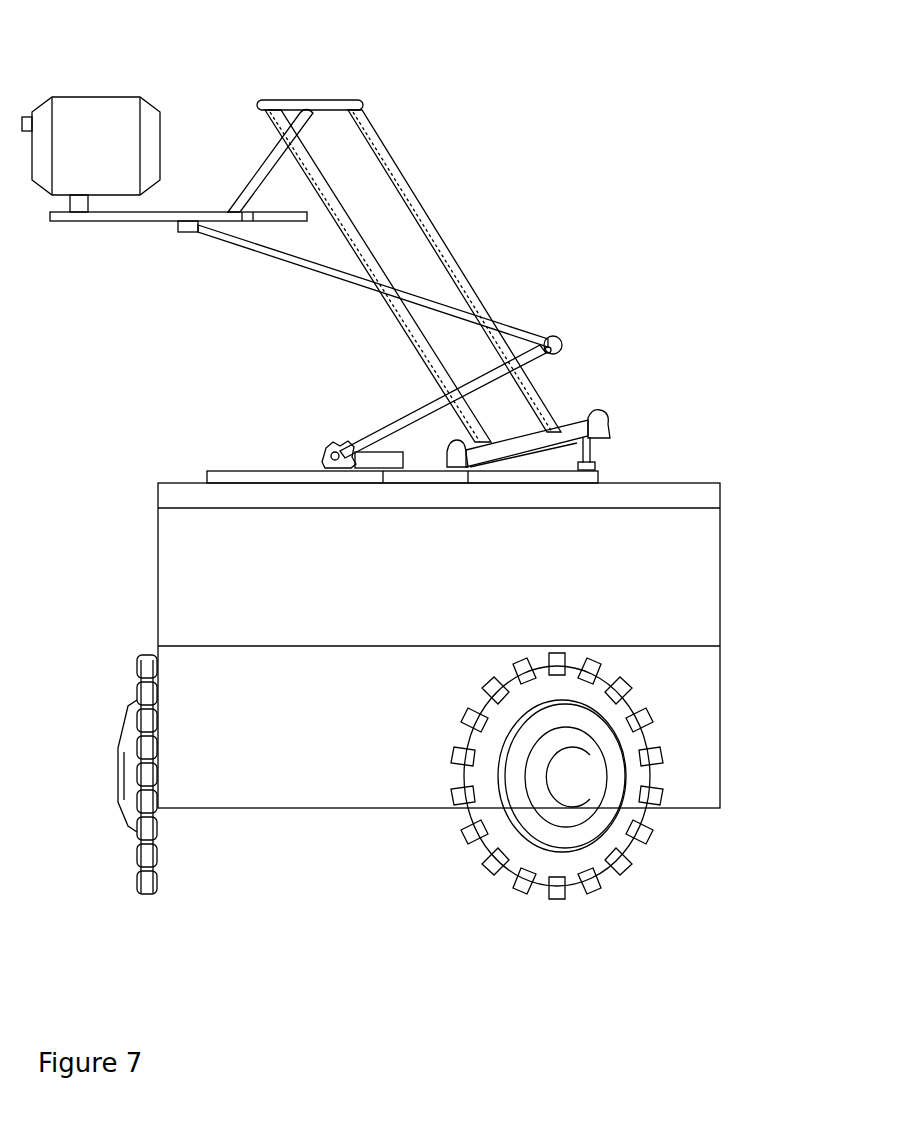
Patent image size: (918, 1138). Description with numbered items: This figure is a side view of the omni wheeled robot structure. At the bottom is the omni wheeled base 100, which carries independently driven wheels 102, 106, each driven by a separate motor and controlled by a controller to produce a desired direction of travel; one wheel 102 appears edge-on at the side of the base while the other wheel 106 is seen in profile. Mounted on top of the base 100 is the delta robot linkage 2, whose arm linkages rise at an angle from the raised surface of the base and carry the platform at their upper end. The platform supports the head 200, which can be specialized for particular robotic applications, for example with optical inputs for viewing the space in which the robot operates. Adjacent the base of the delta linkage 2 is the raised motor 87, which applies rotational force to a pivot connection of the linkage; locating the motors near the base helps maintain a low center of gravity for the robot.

The head 200 is at (102, 88).
The delta robot linkage 2 is at (563, 298).
The raised motor 87 is at (562, 352).
The omni wheeled base 100 is at (732, 560).
The wheel 102 is at (135, 828).
The wheel 106 is at (618, 857).